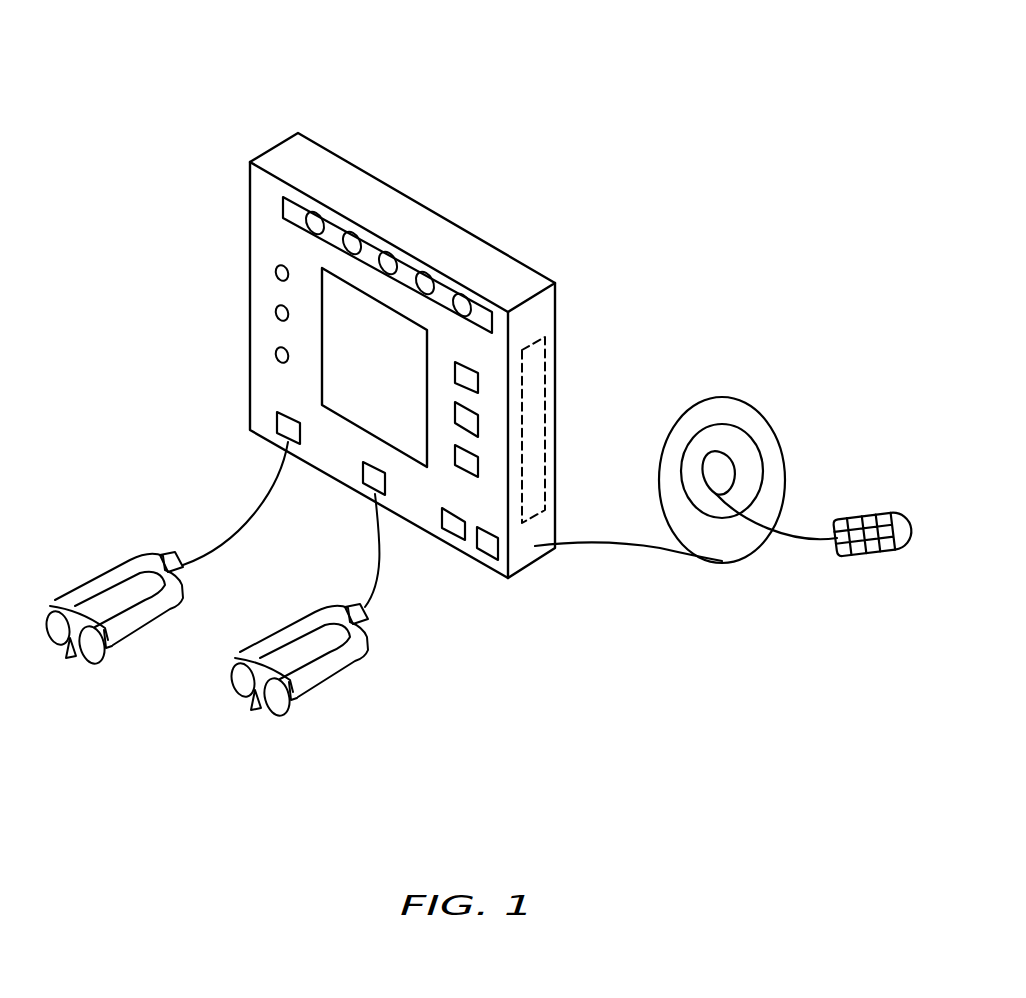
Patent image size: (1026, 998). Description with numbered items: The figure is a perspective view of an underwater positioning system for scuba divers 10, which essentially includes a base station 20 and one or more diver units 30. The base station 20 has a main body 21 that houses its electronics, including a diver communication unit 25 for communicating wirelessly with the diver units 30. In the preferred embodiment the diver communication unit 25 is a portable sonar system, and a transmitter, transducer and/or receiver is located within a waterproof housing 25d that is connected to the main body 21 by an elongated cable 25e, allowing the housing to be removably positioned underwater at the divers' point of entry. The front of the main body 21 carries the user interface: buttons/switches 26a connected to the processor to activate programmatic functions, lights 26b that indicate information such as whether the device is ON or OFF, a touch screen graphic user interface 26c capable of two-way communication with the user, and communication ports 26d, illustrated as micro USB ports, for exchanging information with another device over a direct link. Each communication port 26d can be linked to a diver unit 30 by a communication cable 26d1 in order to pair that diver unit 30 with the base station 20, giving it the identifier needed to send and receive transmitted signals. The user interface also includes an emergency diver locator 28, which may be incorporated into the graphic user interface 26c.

The underwater positioning system for scuba divers 10 is at (150, 71).
The base station 20 is at (214, 232).
The main body 21 is at (287, 156).
The diver communication unit 25 is at (555, 357).
The waterproof housing 25d is at (860, 557).
The elongated cable 25e is at (750, 407).
The buttons/switches 26a is at (478, 383).
The lights 26b is at (276, 273).
The touch screen Graphic User Interface (GUI) 26c is at (397, 373).
The communication ports 26d is at (290, 440).
The communication cable 26d1 is at (220, 542).
The emergency diver locator 28 is at (368, 248).
The diver unit 30 is at (52, 662).